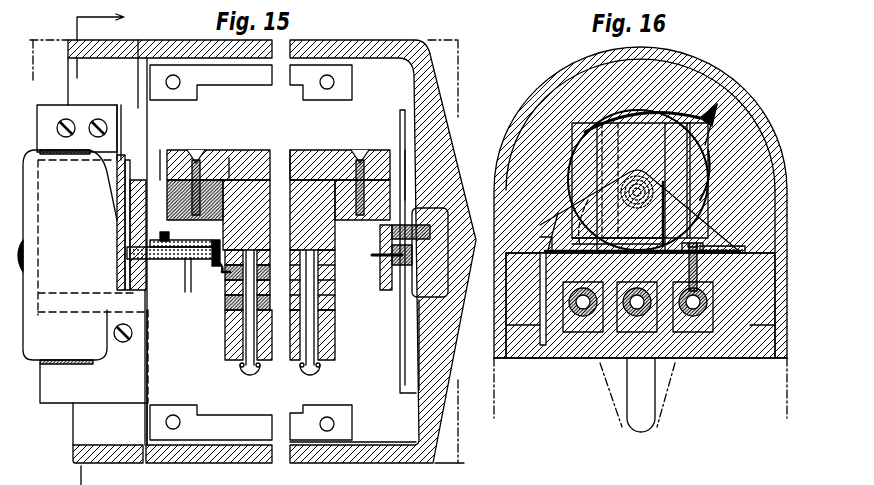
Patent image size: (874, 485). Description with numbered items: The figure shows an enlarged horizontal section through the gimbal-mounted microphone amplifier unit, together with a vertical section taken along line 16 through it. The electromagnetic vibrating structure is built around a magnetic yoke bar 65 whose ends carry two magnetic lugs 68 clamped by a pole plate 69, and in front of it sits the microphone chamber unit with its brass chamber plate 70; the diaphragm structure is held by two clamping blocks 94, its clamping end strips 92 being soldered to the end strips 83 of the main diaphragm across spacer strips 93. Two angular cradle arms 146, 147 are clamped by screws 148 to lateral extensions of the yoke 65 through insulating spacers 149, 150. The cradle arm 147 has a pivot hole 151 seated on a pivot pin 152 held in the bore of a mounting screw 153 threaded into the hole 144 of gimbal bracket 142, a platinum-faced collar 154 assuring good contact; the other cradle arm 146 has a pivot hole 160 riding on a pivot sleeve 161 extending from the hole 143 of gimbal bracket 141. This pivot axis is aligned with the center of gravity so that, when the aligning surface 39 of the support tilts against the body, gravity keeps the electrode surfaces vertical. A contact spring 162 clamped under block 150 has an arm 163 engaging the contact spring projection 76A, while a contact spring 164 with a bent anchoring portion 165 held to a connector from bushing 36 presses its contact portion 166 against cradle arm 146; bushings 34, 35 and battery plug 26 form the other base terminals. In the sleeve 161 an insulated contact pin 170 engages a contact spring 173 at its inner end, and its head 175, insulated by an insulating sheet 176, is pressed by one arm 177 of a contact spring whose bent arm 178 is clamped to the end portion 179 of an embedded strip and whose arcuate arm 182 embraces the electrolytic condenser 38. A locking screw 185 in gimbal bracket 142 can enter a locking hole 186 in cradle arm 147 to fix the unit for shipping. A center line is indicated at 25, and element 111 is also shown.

In FIG. 15, the section line 16— 16 is at (114, 24).
In FIG. 15, the center line 25 is at (505, 402).
In FIG. 16, the battery plug 26 is at (655, 409).
In FIG. 16, the cord plug bushing 34 is at (583, 318).
In FIG. 16, the cord plug bushing 35 is at (637, 318).
In FIG. 16, the cord plug bushing 36 is at (693, 318).
In FIG. 15, the electrolytic condenser 38 is at (34, 356).
In FIG. 15, the aligning surface 39 is at (437, 464).
In FIG. 16, the aligning surface 39 is at (787, 398).
In FIG. 15, the magnetic yoke bar 65 is at (294, 158).
In FIG. 15, the magnetic lug 68 is at (318, 162).
In FIG. 15, the pole plate 69 is at (332, 252).
In FIG. 15, the chamber plate 70 is at (244, 367).
In FIG. 16, the contact spring projection 76A is at (716, 122).
In FIG. 15, the end strip of main diaphragm 83 is at (226, 282).
In FIG. 15, the clamping end strip 92 is at (226, 308).
In FIG. 15, the spacer strip 93 is at (226, 296).
In FIG. 15, the clamping block 94 is at (226, 266).
In FIG. 15, the rod 111 is at (184, 268).
In FIG. 15, the gimbal bracket 141 is at (161, 172).
In FIG. 15, the gimbal bracket 142 is at (454, 158).
In FIG. 15, the pivot hole 143 is at (121, 208).
In FIG. 15, the pivot hole 144 is at (398, 280).
In FIG. 15, the cradle arm 146 is at (172, 200).
In FIG. 16, the cradle arm 146 is at (666, 115).
In FIG. 15, the cradle arm 147 is at (400, 112).
In FIG. 15, the screw 148 is at (197, 166).
In FIG. 15, the insulating spacer 149 is at (192, 152).
In FIG. 15, the insulating spacer 150 is at (247, 166).
In FIG. 15, the pivot hole 151 is at (380, 268).
In FIG. 15, the pivot pin 152 is at (378, 257).
In FIG. 15, the mounting screw 153 is at (453, 305).
In FIG. 15, the collar 154 is at (394, 283).
In FIG. 15, the pivot hole 160 is at (160, 305).
In FIG. 15, the pivot sleeve 161 is at (193, 240).
In FIG. 15, the contact spring 162 is at (231, 154).
In FIG. 16, the contact spring 162 is at (692, 120).
In FIG. 16, the contact spring arm 163 is at (713, 105).
In FIG. 15, the contact spring 164 is at (150, 372).
In FIG. 16, the contact spring 164 is at (702, 240).
In FIG. 15, the bent anchoring portion 165 is at (146, 412).
In FIG. 16, the bent anchoring portion 165 is at (742, 250).
In FIG. 15, the contact portion 166 is at (165, 233).
In FIG. 15, the contact pin 170 is at (190, 282).
In FIG. 15, the contact spring 173 is at (217, 263).
In FIG. 15, the head 175 is at (125, 254).
In FIG. 15, the insulating sheet 176 is at (121, 232).
In FIG. 16, the insulating sheet 176 is at (663, 245).
In FIG. 15, the contact spring arm 177 is at (123, 178).
In FIG. 16, the contact spring arm 177 is at (560, 212).
In FIG. 15, the bent arm 178 is at (49, 108).
In FIG. 16, the bent arm 178 is at (543, 247).
In FIG. 16, the end portion of contact strip 179 is at (572, 250).
In FIG. 16, the arcuately bent arm 182 is at (586, 123).
In FIG. 15, the locking screw 185 is at (455, 215).
In FIG. 15, the locking hole 186 is at (386, 232).